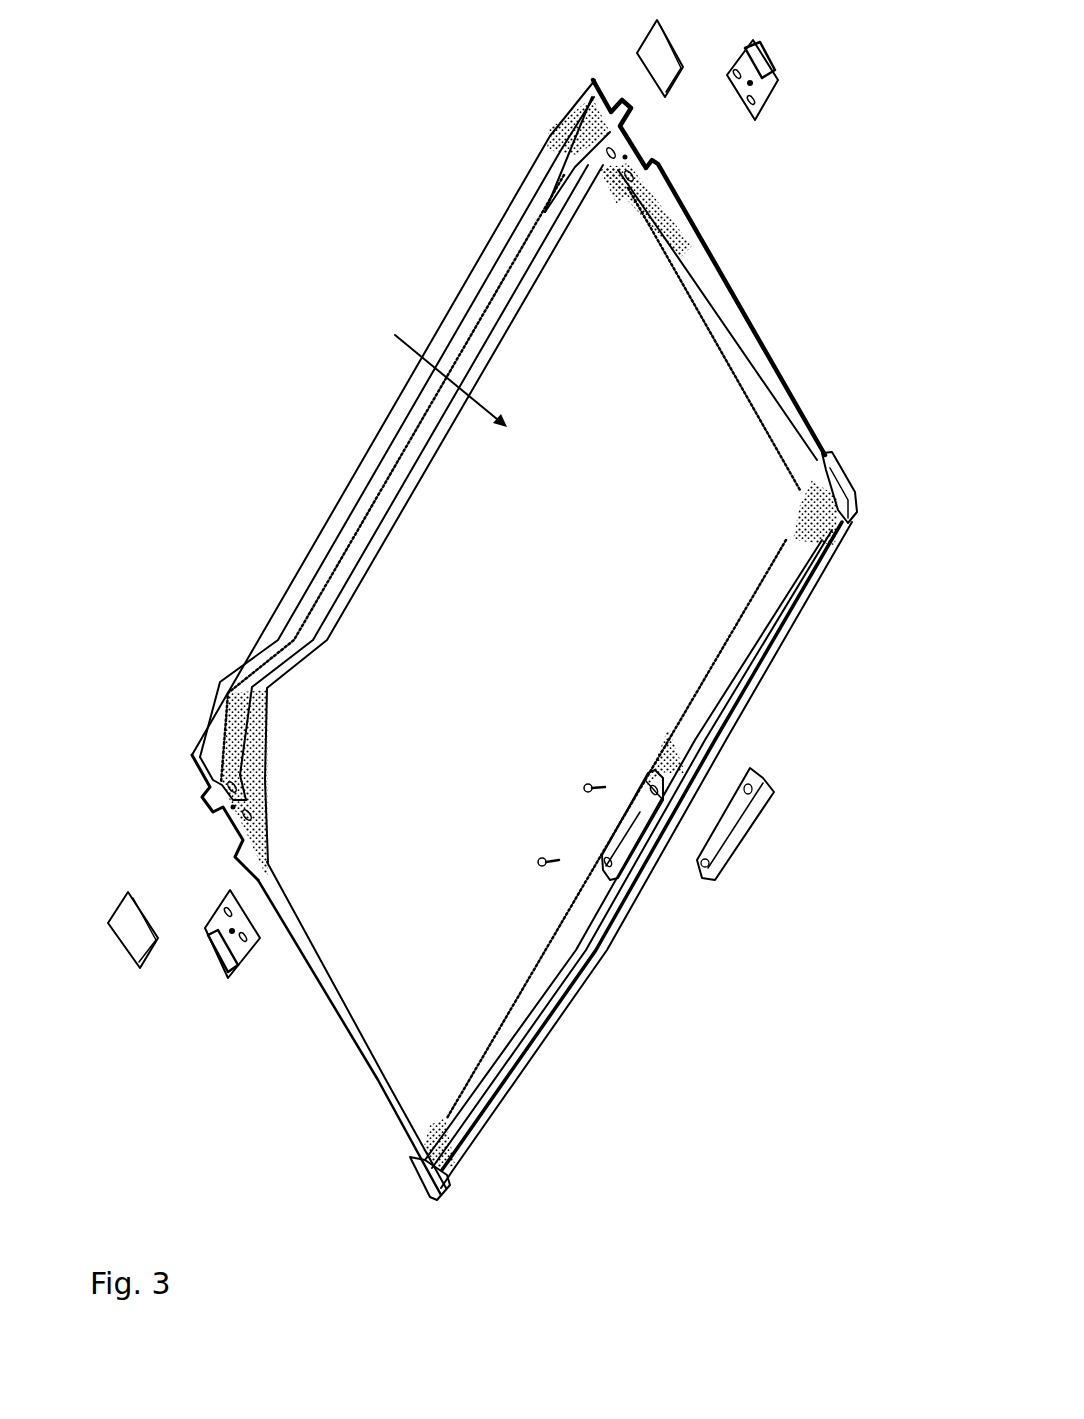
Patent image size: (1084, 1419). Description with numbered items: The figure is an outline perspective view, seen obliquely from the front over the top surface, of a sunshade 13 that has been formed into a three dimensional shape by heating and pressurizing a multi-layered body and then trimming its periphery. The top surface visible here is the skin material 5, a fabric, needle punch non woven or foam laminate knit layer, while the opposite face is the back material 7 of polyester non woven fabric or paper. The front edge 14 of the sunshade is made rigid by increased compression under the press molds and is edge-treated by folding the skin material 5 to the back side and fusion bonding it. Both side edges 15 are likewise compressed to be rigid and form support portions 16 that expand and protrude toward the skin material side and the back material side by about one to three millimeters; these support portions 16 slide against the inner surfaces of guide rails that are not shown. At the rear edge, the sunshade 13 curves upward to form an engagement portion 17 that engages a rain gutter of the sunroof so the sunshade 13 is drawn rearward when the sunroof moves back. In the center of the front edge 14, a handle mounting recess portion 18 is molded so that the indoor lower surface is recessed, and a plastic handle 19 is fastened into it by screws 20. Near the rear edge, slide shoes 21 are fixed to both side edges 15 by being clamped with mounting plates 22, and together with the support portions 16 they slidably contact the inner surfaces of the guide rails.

The skin material 5 is at (763, 670).
The back material 7 is at (722, 303).
The sunshade 13 is at (439, 365).
The front edge 14 is at (607, 940).
The side edges 15 is at (750, 355).
The support portions 16 is at (835, 476).
The engagement portion 17 is at (393, 453).
The handle mounting recess portion 18 is at (622, 840).
The plastic handle 19 is at (727, 828).
The screws 20 is at (590, 786).
The slide shoes 21 is at (745, 92).
The mounting plates 22 is at (657, 63).